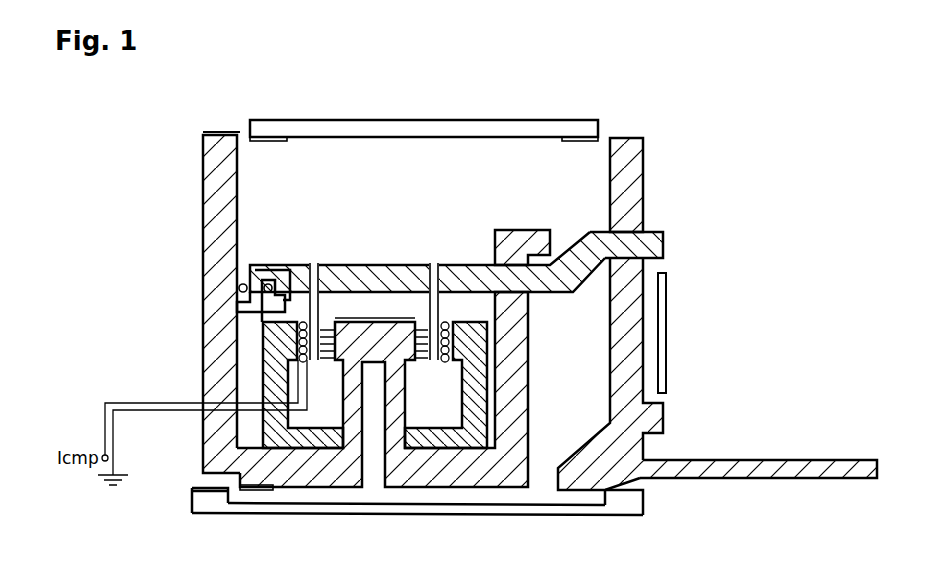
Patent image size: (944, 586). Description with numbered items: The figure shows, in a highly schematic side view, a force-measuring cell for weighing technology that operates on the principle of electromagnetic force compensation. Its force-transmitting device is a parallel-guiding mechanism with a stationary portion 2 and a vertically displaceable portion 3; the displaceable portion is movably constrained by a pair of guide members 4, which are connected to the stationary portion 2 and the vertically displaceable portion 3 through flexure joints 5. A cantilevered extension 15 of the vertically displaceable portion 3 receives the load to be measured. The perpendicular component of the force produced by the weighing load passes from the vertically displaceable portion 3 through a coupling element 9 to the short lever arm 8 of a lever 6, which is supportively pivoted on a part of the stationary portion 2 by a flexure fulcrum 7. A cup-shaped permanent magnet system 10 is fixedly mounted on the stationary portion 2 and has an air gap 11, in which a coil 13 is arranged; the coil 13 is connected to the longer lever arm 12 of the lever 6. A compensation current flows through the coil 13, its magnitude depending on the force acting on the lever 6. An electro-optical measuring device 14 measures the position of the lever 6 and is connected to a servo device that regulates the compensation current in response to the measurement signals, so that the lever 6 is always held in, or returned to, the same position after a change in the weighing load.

The stationary portion 2 is at (220, 190).
The vertically displaceable portion 3 is at (645, 185).
The guide members 4 is at (385, 127).
The flexure joints 5 is at (241, 128).
The lever 6 is at (447, 263).
The flexure fulcrum 7 is at (548, 263).
The short lever arm 8 is at (655, 240).
The coupling element 9 is at (666, 305).
The cup-shaped permanent magnet system 10 is at (443, 440).
The air gap 11 is at (453, 340).
The longer lever arm 12 is at (397, 265).
The coil 13 is at (478, 362).
The electro-optical measuring device 14 is at (226, 289).
The cantilevered extension 15 is at (736, 463).